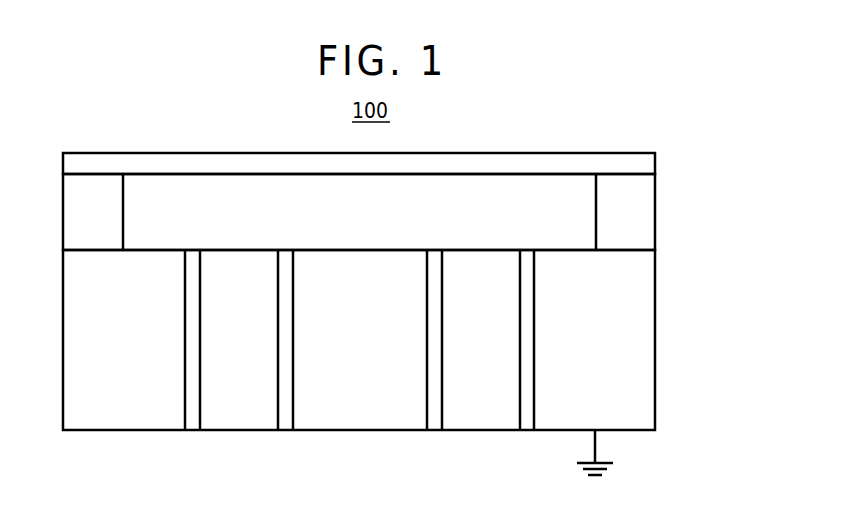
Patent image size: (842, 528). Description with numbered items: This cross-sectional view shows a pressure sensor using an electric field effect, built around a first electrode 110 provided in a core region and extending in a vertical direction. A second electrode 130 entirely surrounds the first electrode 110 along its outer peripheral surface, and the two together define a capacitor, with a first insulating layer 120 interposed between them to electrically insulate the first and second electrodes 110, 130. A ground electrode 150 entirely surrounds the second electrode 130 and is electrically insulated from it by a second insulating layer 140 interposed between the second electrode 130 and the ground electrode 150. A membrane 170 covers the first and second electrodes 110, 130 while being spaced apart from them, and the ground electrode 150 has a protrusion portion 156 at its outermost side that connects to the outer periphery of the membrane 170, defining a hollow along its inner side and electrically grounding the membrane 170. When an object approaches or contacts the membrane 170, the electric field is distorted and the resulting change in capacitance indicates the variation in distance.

The first electrode 110 is at (363, 420).
The first insulating layer 120 is at (436, 420).
The second electrode 130 is at (242, 420).
The second insulating layer 140 is at (528, 420).
The ground electrode 150 is at (125, 420).
The protrusion portion 156 is at (649, 211).
The membrane 170 is at (649, 162).